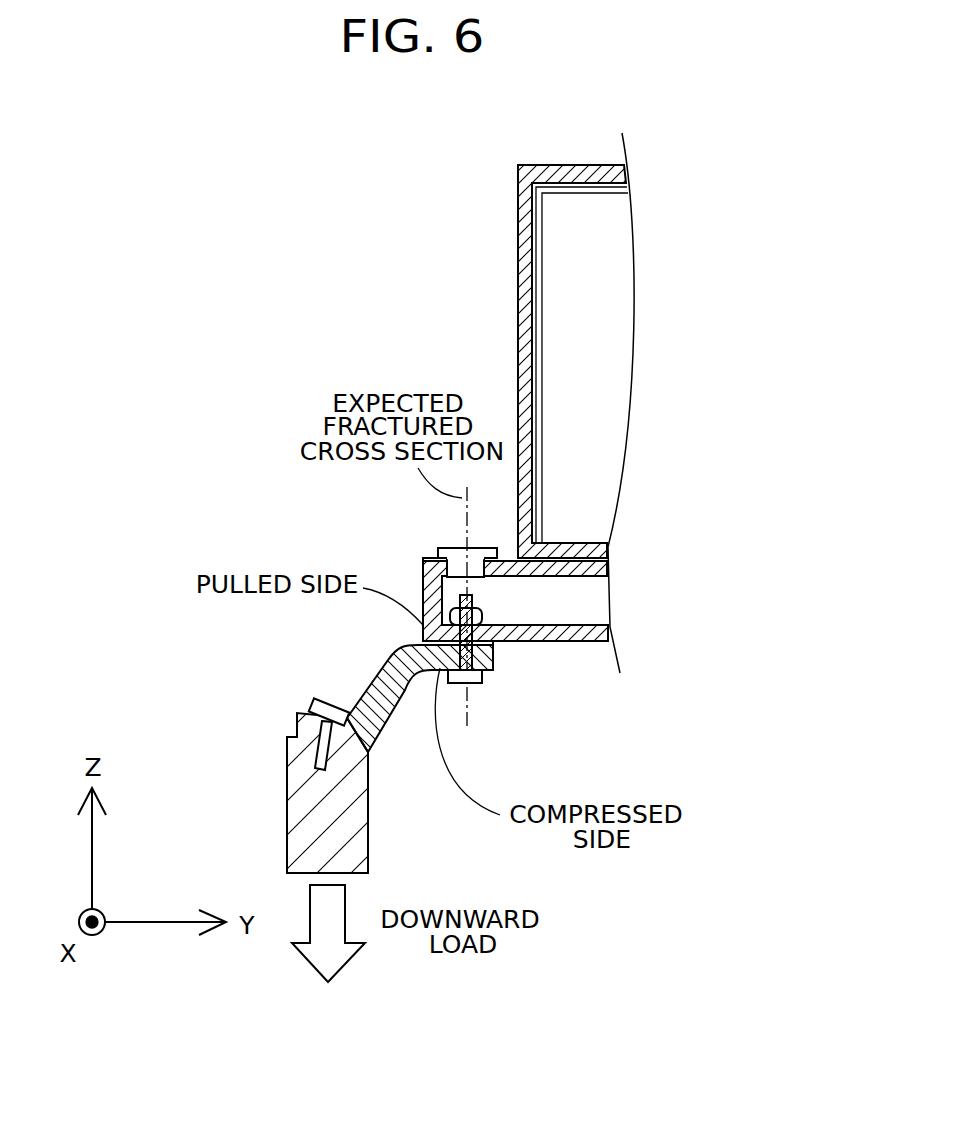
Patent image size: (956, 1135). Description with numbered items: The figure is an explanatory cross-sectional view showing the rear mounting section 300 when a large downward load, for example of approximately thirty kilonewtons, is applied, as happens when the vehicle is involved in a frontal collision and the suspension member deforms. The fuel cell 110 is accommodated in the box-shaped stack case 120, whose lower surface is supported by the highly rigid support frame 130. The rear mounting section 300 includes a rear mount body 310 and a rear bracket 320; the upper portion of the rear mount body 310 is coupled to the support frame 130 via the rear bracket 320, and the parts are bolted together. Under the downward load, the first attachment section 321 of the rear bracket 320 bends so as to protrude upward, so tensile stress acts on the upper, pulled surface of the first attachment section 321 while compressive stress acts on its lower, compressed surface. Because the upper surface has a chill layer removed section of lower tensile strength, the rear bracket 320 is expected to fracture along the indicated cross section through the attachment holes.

The fuel cell 110 is at (626, 366).
The stack case 120 is at (518, 250).
The support frame 130 is at (562, 641).
The rear mounting section 300 is at (322, 754).
The rear mount body 310 is at (287, 760).
The rear bracket 320 is at (365, 693).
The first attachment section 321 is at (493, 653).